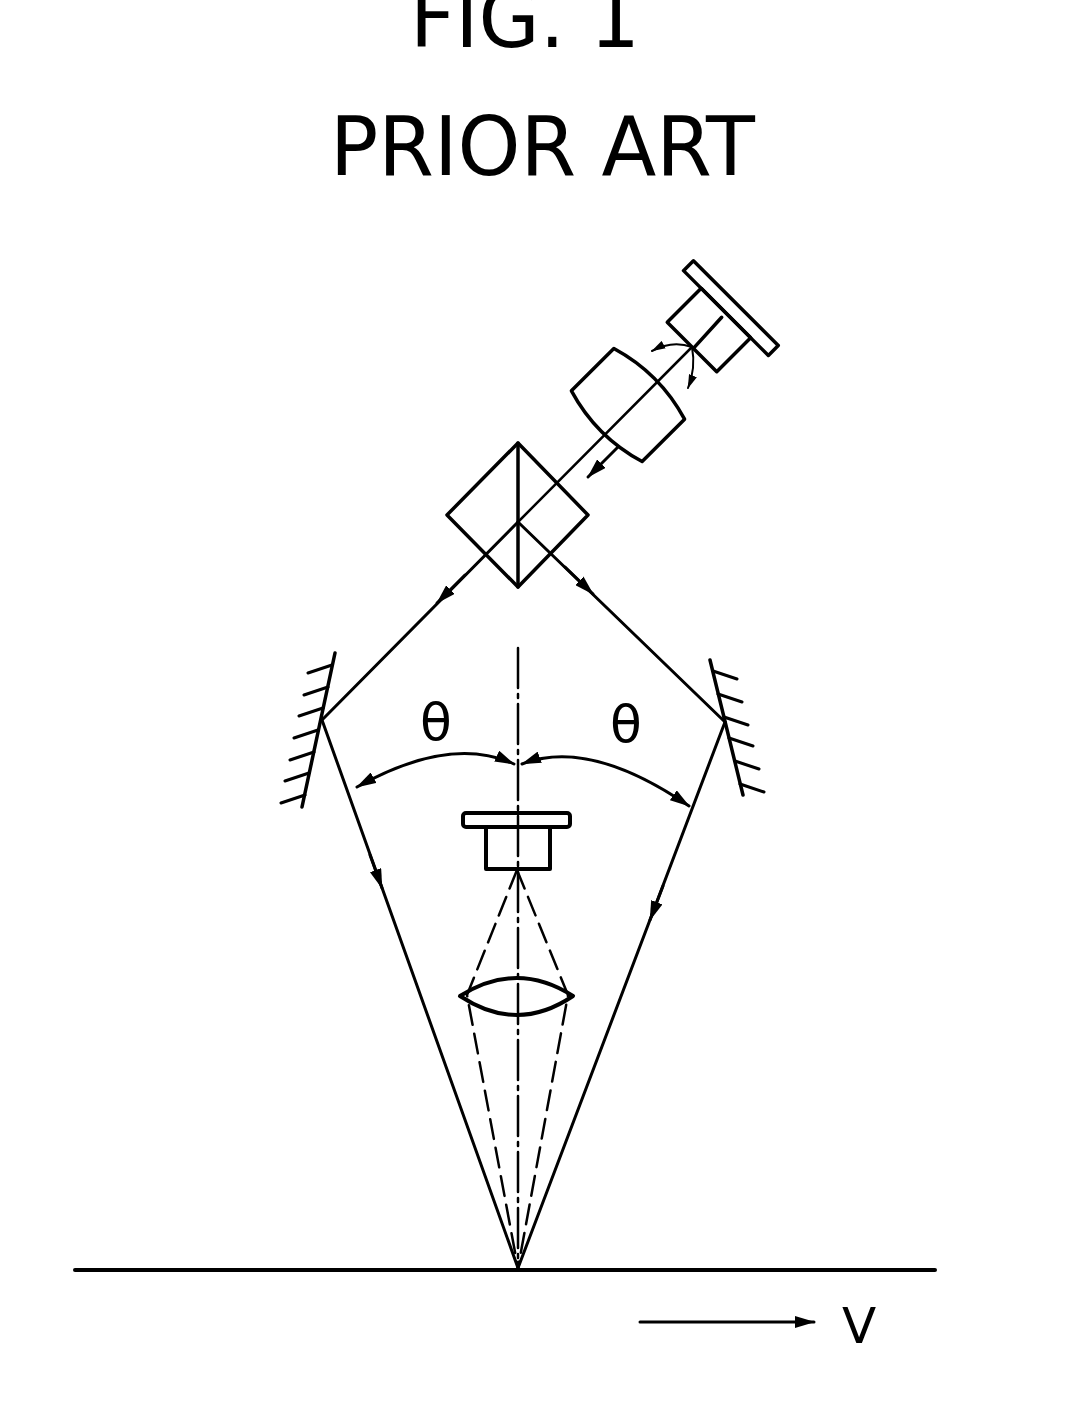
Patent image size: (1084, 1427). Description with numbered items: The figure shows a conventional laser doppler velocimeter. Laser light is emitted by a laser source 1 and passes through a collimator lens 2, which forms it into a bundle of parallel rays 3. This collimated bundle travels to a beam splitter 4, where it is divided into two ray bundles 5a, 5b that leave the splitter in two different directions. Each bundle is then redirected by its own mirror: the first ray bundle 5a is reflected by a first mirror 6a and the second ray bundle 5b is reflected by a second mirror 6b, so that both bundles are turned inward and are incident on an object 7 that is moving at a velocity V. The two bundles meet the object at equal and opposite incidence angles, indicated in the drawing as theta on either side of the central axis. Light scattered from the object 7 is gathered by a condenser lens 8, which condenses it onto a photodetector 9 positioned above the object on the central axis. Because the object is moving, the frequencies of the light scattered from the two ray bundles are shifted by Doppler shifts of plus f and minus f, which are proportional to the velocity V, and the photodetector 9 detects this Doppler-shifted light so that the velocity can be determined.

The laser source 1 is at (682, 307).
The collimator lens 2 is at (598, 362).
The bundle of parallel rays 3 is at (557, 445).
The beam splitter 4 is at (470, 490).
The first ray bundle 5a is at (413, 623).
The second ray bundle 5b is at (620, 617).
The first mirror 6a is at (333, 655).
The second mirror 6b is at (716, 662).
The object 7 is at (267, 1270).
The condenser lens 8 is at (466, 988).
The photodetector 9 is at (485, 826).